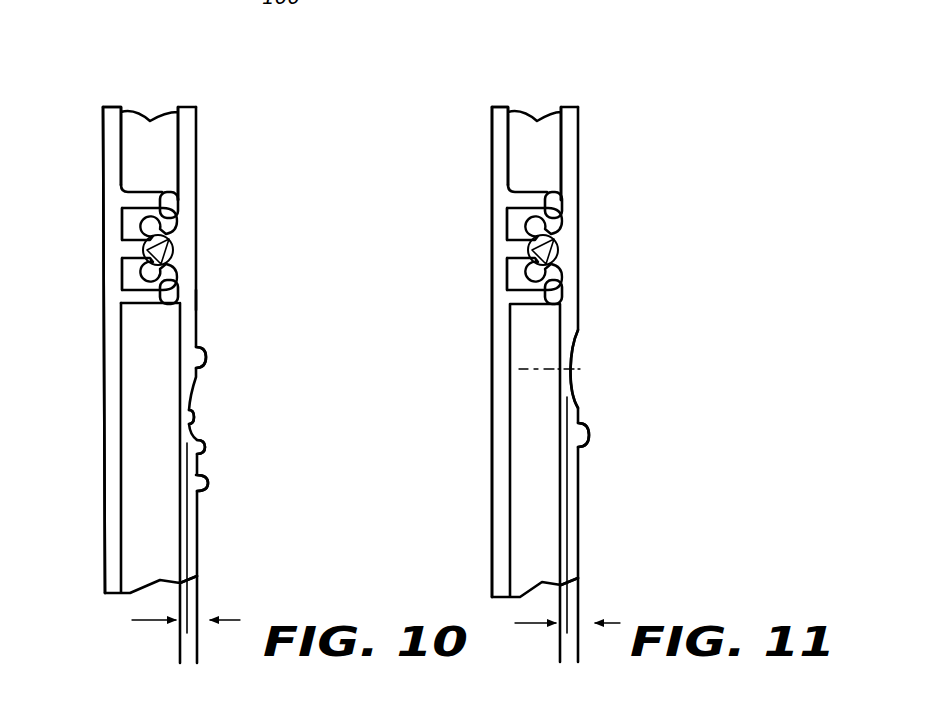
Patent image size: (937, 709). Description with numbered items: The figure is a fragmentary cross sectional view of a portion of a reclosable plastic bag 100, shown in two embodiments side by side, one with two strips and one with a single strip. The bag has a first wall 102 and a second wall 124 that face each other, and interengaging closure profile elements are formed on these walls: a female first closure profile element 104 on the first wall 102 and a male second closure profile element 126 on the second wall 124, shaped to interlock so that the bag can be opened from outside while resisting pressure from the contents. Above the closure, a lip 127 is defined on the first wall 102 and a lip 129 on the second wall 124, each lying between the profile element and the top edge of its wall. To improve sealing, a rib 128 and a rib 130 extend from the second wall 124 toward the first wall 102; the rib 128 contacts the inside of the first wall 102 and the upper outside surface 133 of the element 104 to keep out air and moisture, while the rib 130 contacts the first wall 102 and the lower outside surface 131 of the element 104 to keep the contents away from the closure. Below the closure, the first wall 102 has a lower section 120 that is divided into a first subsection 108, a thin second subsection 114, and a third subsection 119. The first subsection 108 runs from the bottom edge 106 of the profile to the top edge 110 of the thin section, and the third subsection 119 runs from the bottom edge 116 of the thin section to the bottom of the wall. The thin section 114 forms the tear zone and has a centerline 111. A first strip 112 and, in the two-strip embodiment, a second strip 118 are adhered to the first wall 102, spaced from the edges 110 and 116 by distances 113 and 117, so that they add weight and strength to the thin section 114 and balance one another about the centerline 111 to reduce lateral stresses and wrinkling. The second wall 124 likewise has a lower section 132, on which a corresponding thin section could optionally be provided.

In FIG. 10, the bag 100 is at (162, 101).
In FIG. 11, the bag 100 is at (545, 103).
In FIG. 10, the first wall 102 is at (194, 123).
In FIG. 11, the first wall 102 is at (580, 123).
In FIG. 10, the first closure profile element 104 is at (173, 230).
In FIG. 11, the first closure profile element 104 is at (558, 231).
In FIG. 10, the bottom edge of profile 106 is at (192, 298).
In FIG. 11, the bottom edge of profile 106 is at (578, 295).
In FIG. 10, the first subsection 108 is at (198, 325).
In FIG. 11, the first subsection 108 is at (578, 318).
In FIG. 10, the top edge of second subsection 110 is at (197, 380).
In FIG. 11, the top edge of second subsection 110 is at (578, 336).
In FIG. 11, the centerline 111 is at (553, 368).
In FIG. 10, the first strip 112 is at (205, 357).
In FIG. 11, the first strip 112 is at (589, 443).
In FIG. 10, the distance 113 is at (197, 373).
In FIG. 10, the second subsection 114 is at (184, 433).
In FIG. 11, the second subsection 114 is at (575, 366).
In FIG. 10, the bottom edge of second subsection 116 is at (190, 440).
In FIG. 11, the bottom edge of second subsection 116 is at (579, 405).
In FIG. 10, the distance 117 is at (203, 450).
In FIG. 11, the distance 117 is at (580, 413).
In FIG. 10, the second strip 118 is at (208, 486).
In FIG. 10, the third subsection 119 is at (198, 537).
In FIG. 11, the third subsection 119 is at (578, 512).
In FIG. 10, the lower section 120 is at (200, 574).
In FIG. 11, the lower section 120 is at (578, 560).
In FIG. 10, the second wall 124 is at (102, 136).
In FIG. 11, the second wall 124 is at (491, 132).
In FIG. 10, the second closure profile element 126 is at (133, 250).
In FIG. 11, the second closure profile element 126 is at (520, 252).
In FIG. 10, the lip 127 is at (188, 182).
In FIG. 11, the lip 127 is at (572, 175).
In FIG. 10, the rib 128 is at (135, 199).
In FIG. 11, the rib 128 is at (520, 197).
In FIG. 10, the lip 129 is at (107, 162).
In FIG. 11, the lip 129 is at (494, 162).
In FIG. 10, the rib 130 is at (137, 298).
In FIG. 11, the rib 130 is at (520, 298).
In FIG. 10, the lower outside surface 131 is at (168, 306).
In FIG. 10, the lower section of second wall 132 is at (108, 410).
In FIG. 11, the lower section of second wall 132 is at (495, 400).
In FIG. 10, the upper outside surface 133 is at (165, 197).